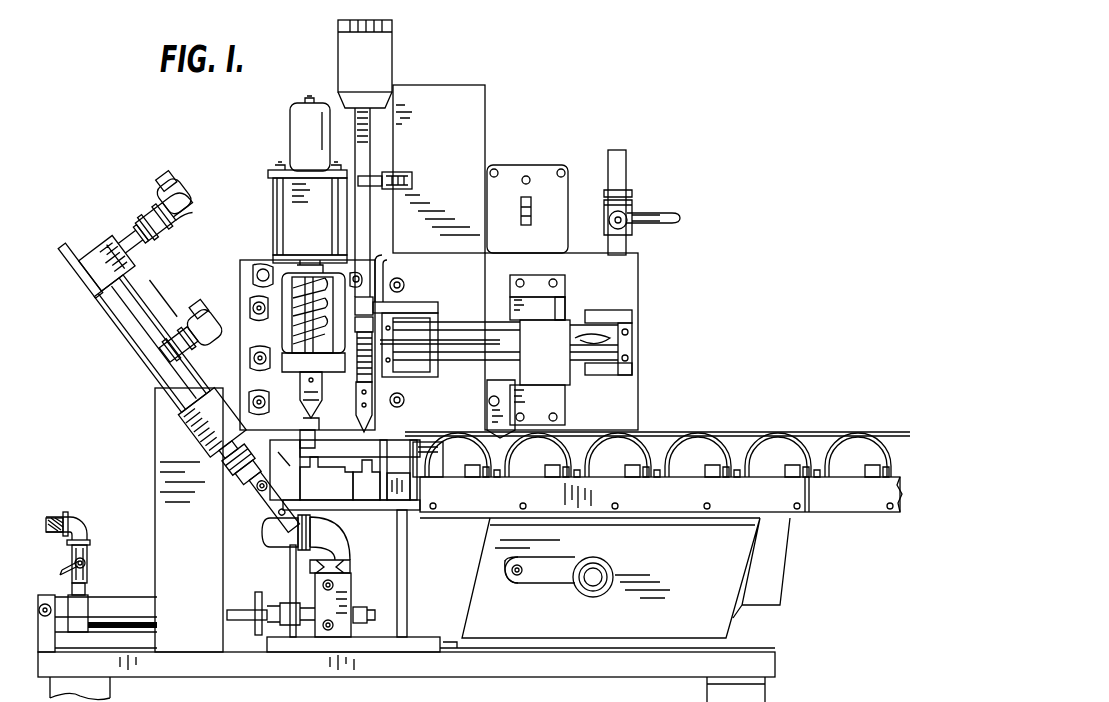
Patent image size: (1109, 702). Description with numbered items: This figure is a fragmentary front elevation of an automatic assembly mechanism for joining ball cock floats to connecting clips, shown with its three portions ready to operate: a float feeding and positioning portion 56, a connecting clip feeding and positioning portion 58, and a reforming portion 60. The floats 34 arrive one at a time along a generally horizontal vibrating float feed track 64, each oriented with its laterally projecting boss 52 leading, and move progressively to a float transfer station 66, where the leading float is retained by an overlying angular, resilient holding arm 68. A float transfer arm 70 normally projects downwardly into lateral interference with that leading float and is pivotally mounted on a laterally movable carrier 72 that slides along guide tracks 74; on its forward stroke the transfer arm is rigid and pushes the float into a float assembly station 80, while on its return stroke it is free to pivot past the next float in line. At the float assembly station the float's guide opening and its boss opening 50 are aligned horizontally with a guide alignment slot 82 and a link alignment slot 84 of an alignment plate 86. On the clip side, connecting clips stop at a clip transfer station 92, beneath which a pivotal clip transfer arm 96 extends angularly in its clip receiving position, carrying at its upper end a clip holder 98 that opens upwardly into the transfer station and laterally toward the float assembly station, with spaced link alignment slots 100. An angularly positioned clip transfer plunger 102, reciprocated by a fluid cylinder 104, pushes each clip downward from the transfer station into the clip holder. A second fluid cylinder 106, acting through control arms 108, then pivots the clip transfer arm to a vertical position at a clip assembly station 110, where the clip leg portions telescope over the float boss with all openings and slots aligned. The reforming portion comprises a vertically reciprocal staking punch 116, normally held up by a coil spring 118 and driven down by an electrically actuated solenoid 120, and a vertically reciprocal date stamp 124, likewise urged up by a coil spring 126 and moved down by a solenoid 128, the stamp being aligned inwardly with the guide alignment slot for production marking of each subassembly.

The float 34 is at (537, 463).
The boss opening 50 is at (427, 465).
The float boss 52 is at (421, 461).
The float feeding and positioning portion 56 is at (603, 409).
The connecting clip feeding and positioning portion 58 is at (152, 343).
The reforming portion 60 is at (269, 233).
The float feed track 64 is at (780, 500).
The float transfer station 66 is at (455, 489).
The resilient holding arm 68 is at (430, 432).
The float transfer arm 70 is at (492, 400).
The carrier 72 is at (565, 384).
The guide tracks 74 is at (618, 335).
The float assembly station 80 is at (350, 478).
The guide alignment slot 82 is at (368, 466).
The link alignment slot 84 is at (308, 467).
The alignment plate 86 is at (344, 535).
The clip transfer station 92 is at (240, 461).
The pivotal clip transfer arm 96 is at (270, 528).
The clip holder 98 is at (262, 486).
The link alignment slots 100 is at (274, 502).
The clip transfer plunger 102 is at (212, 422).
The fluid cylinder 104 is at (97, 258).
The fluid cylinder 106 is at (121, 611).
The control arms 108 is at (294, 600).
The clip assembly station 110 is at (310, 444).
The staking punch 116 is at (322, 403).
The coil spring 118 is at (268, 282).
The solenoid 120 is at (303, 147).
The date stamp 124 is at (370, 418).
The coil spring 126 is at (366, 345).
The solenoid 128 is at (380, 74).